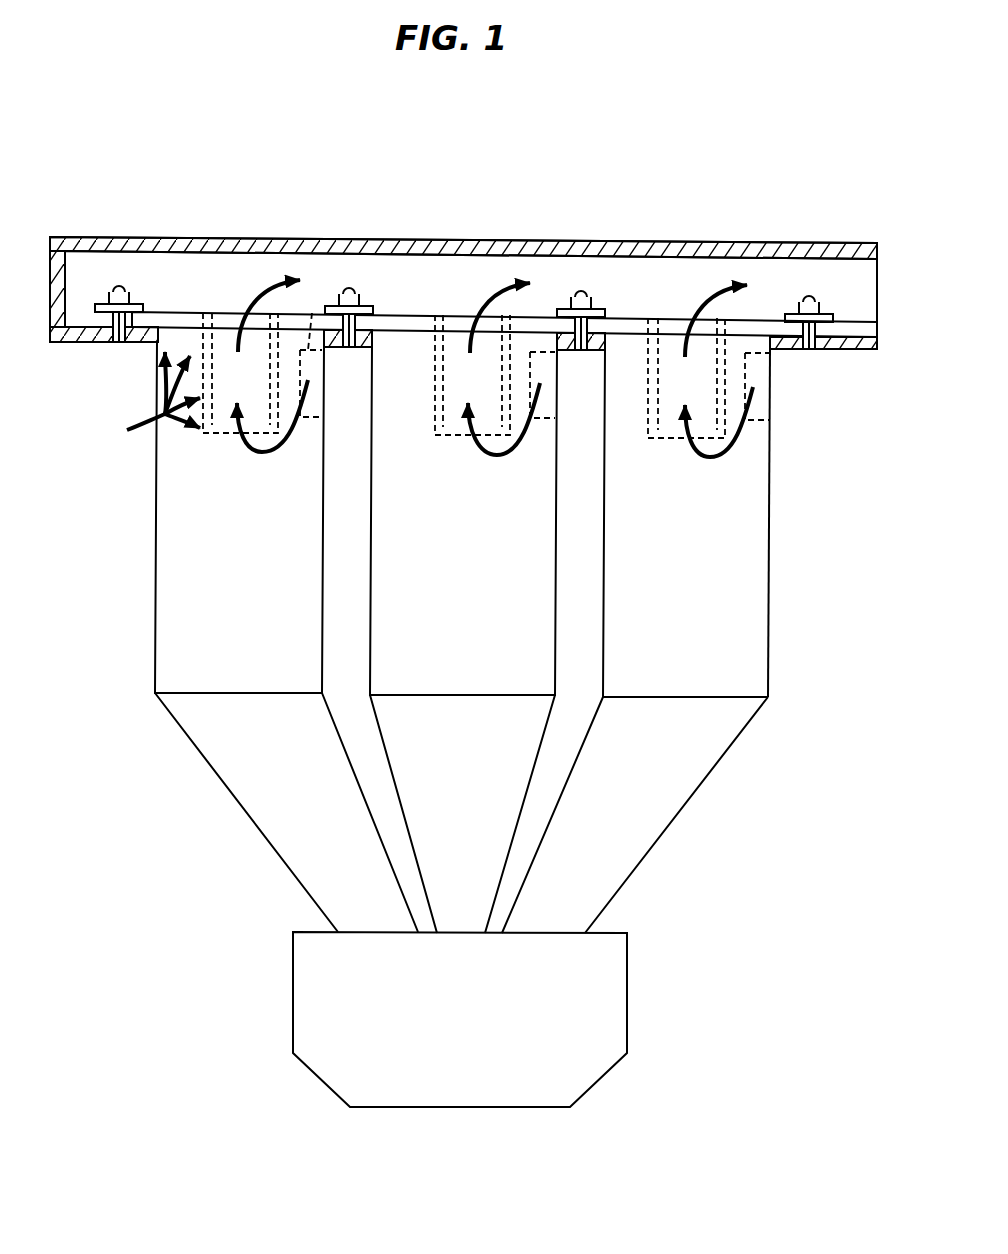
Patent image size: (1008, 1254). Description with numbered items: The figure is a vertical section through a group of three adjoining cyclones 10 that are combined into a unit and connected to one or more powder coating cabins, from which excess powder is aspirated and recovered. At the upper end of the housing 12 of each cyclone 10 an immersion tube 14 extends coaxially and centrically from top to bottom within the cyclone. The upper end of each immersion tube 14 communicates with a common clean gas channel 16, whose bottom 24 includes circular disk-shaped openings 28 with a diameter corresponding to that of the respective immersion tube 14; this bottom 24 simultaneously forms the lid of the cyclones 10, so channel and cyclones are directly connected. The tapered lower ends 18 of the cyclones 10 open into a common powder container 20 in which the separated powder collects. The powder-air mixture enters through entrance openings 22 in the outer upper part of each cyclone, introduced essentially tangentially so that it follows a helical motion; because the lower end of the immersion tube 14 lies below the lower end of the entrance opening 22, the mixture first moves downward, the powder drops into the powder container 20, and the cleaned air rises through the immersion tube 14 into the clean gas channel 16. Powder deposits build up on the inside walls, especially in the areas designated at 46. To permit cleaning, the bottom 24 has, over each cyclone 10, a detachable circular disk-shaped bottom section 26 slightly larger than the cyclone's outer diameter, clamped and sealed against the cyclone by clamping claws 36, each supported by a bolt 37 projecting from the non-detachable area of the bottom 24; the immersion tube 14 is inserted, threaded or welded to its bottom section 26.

The cyclone 10 is at (254, 564).
The housing 12 is at (769, 605).
The immersion tube 14 is at (203, 430).
The clean gas channel 16 is at (277, 270).
The lower end 18 is at (340, 900).
The powder container 20 is at (477, 1039).
The entrance opening 22 is at (312, 313).
The bottom 24 is at (63, 342).
The detachable bottom section 26 is at (178, 322).
The circular disk-shaped opening 28 is at (225, 322).
The clamping claw 36 is at (139, 303).
The bolt 37 is at (109, 343).
The powder deposit area 46 is at (151, 398).